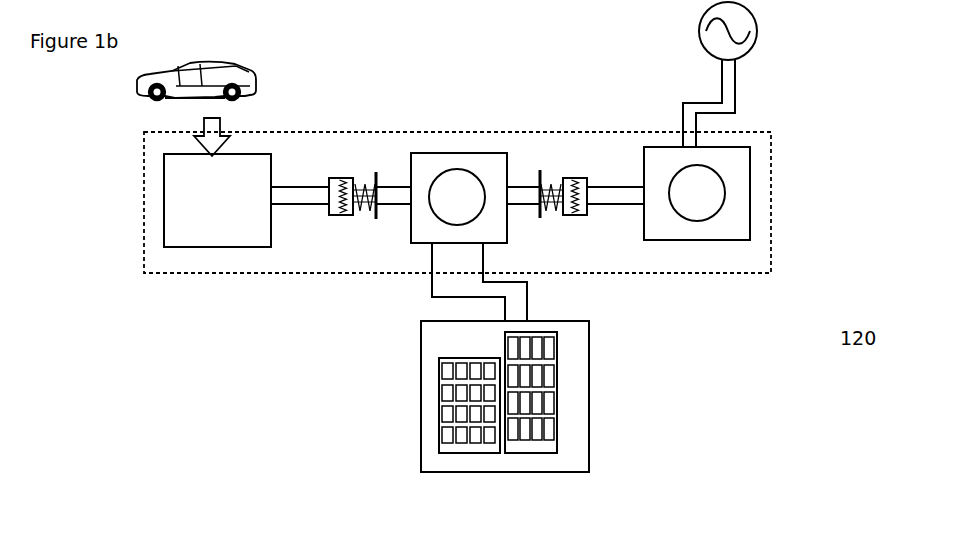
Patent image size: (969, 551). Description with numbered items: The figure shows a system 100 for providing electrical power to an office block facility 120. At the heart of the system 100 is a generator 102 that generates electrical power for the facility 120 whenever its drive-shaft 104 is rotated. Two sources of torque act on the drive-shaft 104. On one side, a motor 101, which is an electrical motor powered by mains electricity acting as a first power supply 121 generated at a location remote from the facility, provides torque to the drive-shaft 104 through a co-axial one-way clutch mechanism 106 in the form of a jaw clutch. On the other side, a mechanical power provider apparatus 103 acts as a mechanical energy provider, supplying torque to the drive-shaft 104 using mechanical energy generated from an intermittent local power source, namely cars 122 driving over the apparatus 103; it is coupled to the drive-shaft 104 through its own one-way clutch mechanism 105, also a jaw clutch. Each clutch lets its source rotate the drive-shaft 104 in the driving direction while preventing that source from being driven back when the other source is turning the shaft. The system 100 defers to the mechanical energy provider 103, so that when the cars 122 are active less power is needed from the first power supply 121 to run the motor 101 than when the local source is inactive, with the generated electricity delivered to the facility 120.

The system 100 is at (217, 273).
The motor 101 is at (723, 232).
The generator 102 is at (433, 170).
The mechanical power provider apparatus 103 is at (218, 217).
The drive-shaft 104 is at (403, 192).
The one-way clutch mechanism 105 is at (340, 178).
The one-way clutch mechanism 106 is at (565, 180).
The facility 120 is at (578, 383).
The first power supply 121 is at (717, 49).
The cars 122 is at (213, 87).